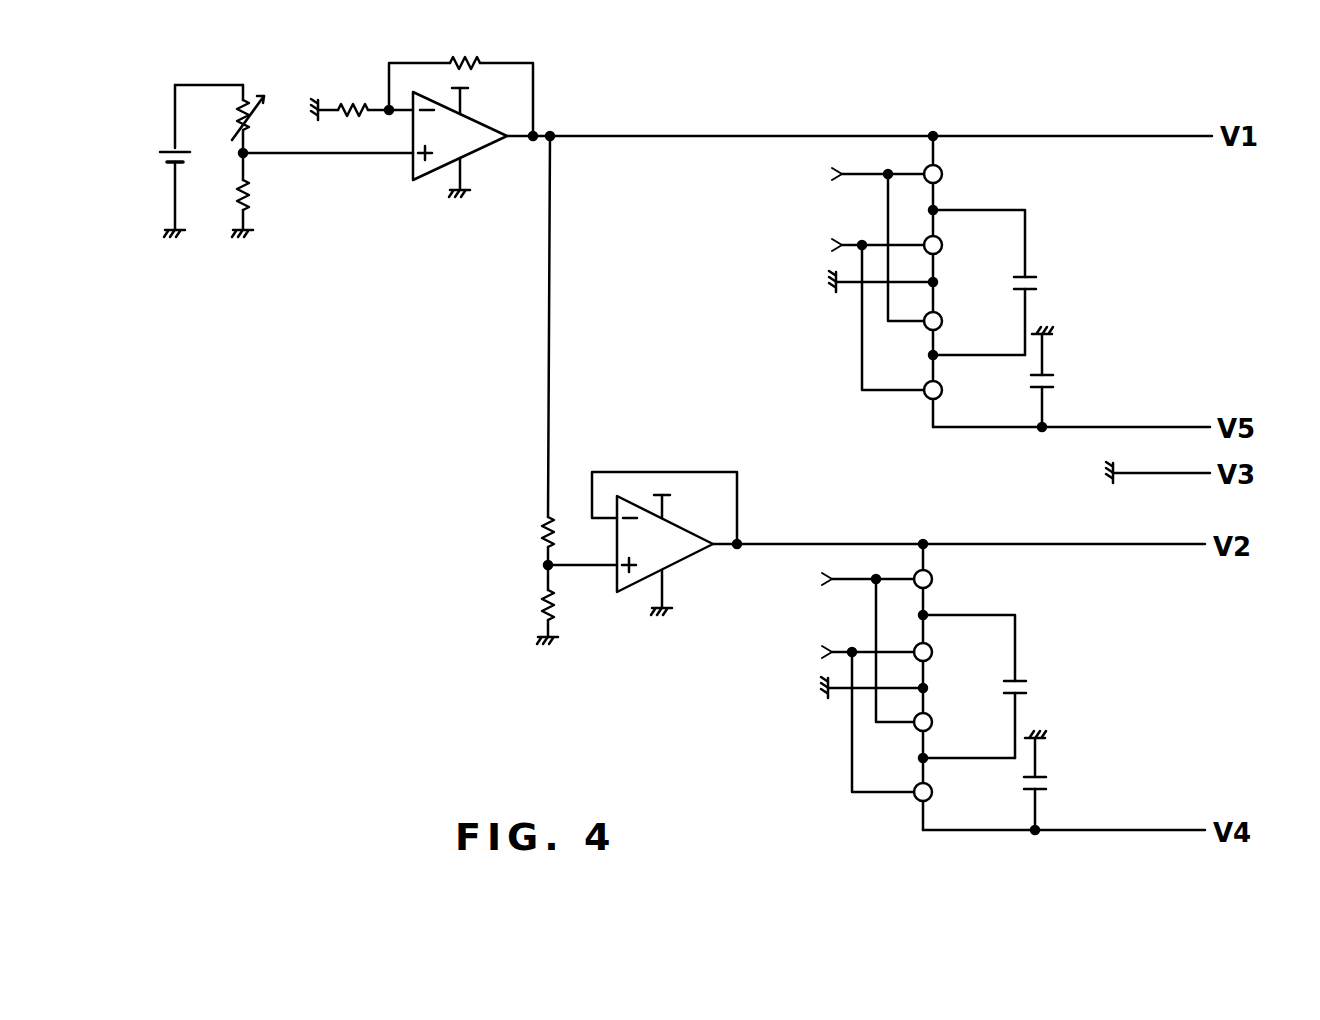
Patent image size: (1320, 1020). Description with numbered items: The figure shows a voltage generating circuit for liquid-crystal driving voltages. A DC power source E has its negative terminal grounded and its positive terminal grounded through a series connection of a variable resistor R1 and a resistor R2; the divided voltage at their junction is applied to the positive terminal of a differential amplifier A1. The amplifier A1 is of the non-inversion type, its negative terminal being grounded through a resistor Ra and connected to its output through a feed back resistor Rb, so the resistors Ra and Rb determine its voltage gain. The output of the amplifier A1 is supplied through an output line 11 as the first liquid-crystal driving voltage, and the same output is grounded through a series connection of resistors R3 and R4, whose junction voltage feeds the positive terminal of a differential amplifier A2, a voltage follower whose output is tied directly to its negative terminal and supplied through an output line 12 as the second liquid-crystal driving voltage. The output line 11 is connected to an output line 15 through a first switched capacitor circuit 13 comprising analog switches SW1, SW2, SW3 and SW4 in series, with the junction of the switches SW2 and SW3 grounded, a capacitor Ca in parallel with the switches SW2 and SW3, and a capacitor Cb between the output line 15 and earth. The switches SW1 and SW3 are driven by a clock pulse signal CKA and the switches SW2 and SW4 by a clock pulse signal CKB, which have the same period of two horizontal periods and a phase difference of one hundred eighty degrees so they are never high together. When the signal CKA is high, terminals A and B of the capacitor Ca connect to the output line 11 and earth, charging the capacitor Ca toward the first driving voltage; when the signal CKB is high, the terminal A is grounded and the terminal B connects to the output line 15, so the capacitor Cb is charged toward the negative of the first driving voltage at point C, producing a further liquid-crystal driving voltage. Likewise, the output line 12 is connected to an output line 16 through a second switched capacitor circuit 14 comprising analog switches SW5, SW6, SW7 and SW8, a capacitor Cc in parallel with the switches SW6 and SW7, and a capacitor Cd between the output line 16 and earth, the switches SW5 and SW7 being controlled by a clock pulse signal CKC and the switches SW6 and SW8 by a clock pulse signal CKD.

The output line 11 is at (1016, 136).
The output line 12 is at (955, 544).
The first switched capacitor circuit 13 is at (971, 283).
The second switched capacitor circuit 14 is at (950, 689).
The output line 15 is at (1175, 427).
The output line 16 is at (1135, 830).
The DC power source E is at (154, 158).
The variable resistor R1 is at (232, 119).
The resistor R2 is at (226, 195).
The resistor Ra is at (362, 99).
The feed back resistor Rb is at (461, 84).
The resistor R3 is at (522, 540).
The resistor R4 is at (524, 604).
The differential amplifier A1 is at (406, 178).
The differential amplifier A2 is at (636, 592).
The analog switch SW1 is at (968, 174).
The analog switch SW2 is at (968, 245).
The analog switch SW3 is at (968, 321).
The analog switch SW4 is at (968, 390).
The analog switch SW5 is at (958, 579).
The analog switch SW6 is at (958, 652).
The analog switch SW7 is at (958, 722).
The analog switch SW8 is at (958, 792).
The clock pulse signal CKA is at (839, 240).
The clock pulse signal CKB is at (839, 310).
The clock pulse signal CKC is at (832, 643).
The clock pulse signal CKD is at (832, 714).
The capacitor Ca is at (1045, 314).
The capacitor Cb is at (1063, 379).
The capacitor Cc is at (1035, 714).
The capacitor Cd is at (1057, 782).
The terminal A is at (1025, 210).
The terminal B is at (1024, 311).
The point C is at (1090, 427).